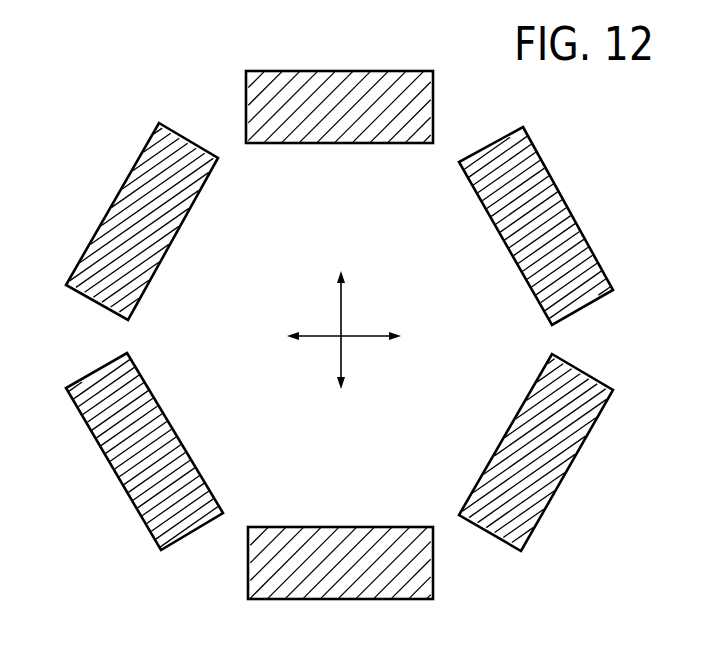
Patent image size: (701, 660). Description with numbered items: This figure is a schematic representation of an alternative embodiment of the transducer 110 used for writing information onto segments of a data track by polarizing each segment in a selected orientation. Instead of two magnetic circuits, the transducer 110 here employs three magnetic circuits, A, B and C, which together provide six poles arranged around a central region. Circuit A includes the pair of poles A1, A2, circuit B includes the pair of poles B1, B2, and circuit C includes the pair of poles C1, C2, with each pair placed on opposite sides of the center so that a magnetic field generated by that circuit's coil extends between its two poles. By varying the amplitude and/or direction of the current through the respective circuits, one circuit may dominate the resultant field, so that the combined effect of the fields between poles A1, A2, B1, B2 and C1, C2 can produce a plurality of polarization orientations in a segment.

The transducer 110 is at (116, 95).
The pole A1 is at (147, 221).
The pole B1 is at (339, 108).
The pole C1 is at (538, 226).
The pole A2 is at (537, 452).
The pole B2 is at (340, 577).
The pole C2 is at (144, 451).